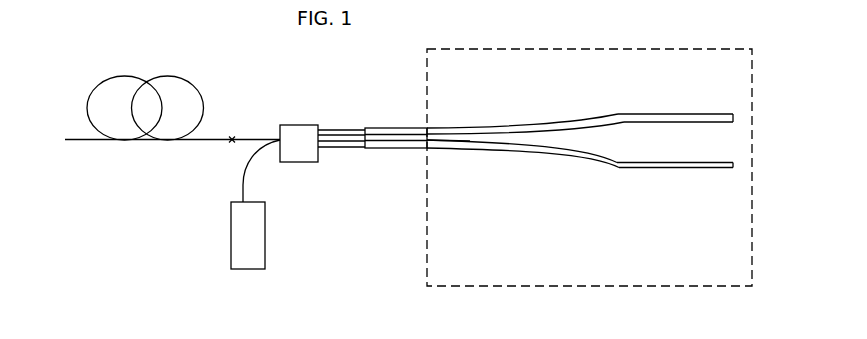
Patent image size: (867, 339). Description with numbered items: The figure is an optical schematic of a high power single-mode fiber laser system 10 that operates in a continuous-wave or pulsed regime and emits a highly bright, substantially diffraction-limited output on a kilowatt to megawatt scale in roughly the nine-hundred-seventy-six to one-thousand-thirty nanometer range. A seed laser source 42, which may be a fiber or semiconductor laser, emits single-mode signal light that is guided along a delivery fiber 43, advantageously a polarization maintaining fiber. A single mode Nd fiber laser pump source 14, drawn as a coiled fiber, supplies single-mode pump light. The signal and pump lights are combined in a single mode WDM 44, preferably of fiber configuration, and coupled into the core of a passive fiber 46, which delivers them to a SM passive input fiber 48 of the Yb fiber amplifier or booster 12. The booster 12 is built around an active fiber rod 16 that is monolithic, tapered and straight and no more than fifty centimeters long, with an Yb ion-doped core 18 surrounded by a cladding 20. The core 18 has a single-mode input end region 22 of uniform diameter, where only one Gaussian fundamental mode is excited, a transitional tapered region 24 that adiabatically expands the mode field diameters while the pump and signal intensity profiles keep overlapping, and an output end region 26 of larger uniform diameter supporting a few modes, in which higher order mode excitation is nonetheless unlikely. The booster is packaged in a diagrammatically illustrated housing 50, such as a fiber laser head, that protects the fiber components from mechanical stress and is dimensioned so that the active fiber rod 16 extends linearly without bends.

The high power SM fiber laser system 10 is at (210, 172).
The Yb fiber amplifier or booster 12 is at (493, 120).
The single mode Nd fiber laser pump source 14 is at (207, 110).
The active fiber rod 16 is at (557, 125).
The Yb ion-doped core 18 is at (438, 138).
The cladding 20 is at (658, 117).
The single-mode input end region 22 is at (462, 143).
The transitional tapered region 24 is at (543, 152).
The output end region 26 is at (657, 168).
The seed laser source 42 is at (238, 227).
The delivery fiber 43 is at (244, 178).
The single mode WDM 44 is at (298, 148).
The passive fiber 46 is at (360, 146).
The SM passive input fiber 48 is at (412, 148).
The housing 50 is at (607, 245).